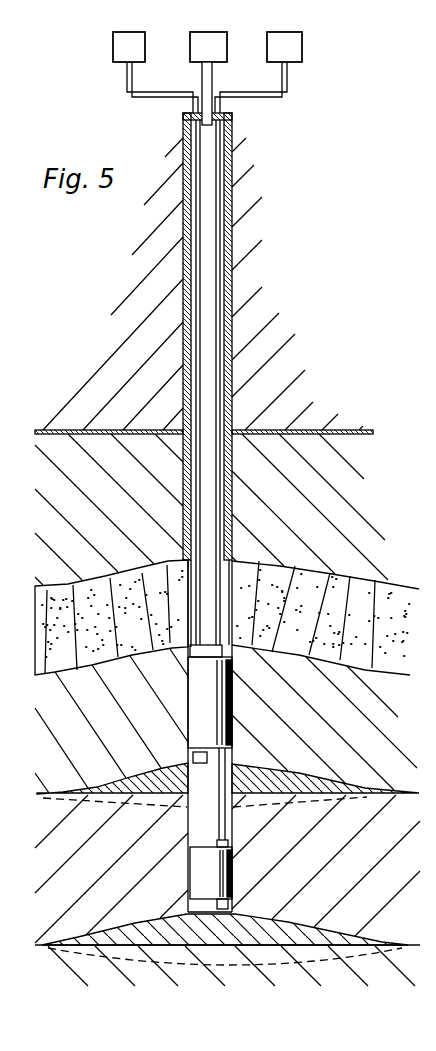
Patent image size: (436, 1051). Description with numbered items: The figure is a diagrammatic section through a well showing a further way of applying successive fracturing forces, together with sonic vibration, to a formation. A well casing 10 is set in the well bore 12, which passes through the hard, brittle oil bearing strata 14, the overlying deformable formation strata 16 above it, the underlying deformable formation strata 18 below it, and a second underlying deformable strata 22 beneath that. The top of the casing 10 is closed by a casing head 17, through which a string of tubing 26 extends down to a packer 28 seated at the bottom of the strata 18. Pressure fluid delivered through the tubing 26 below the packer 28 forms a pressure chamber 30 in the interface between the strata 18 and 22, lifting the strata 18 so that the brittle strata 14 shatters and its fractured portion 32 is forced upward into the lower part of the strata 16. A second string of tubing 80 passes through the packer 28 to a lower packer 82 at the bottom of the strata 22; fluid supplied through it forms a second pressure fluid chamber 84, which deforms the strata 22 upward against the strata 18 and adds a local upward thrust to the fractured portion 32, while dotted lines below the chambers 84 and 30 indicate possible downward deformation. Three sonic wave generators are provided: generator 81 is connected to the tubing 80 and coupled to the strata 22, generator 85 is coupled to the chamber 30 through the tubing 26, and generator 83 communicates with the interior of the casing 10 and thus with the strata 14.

The well casing 10 is at (228, 313).
The well bore 12 is at (238, 806).
The oil bearing strata 14 is at (371, 597).
The overlying deformable formation strata 16 is at (93, 459).
The casing head 17 is at (183, 117).
The underlying deformable formation strata 18 is at (92, 765).
The second underlying deformable strata 22 is at (387, 912).
The string of tubing 26 is at (197, 392).
The packer 28 is at (208, 728).
The pressure chamber 30 is at (155, 773).
The fractured portion 32 is at (282, 577).
The second string of tubing 80 is at (220, 367).
The sonic wave generator 81 is at (288, 48).
The packer 82 is at (223, 877).
The sonic wave generator 83 is at (217, 43).
The pressure fluid chamber 84 is at (175, 925).
The sonic wave generator 85 is at (137, 43).